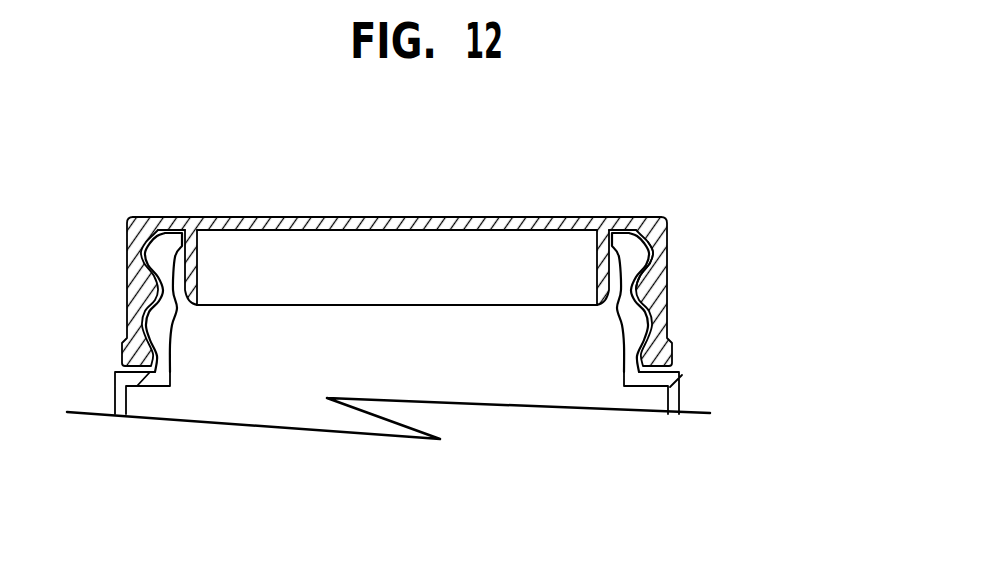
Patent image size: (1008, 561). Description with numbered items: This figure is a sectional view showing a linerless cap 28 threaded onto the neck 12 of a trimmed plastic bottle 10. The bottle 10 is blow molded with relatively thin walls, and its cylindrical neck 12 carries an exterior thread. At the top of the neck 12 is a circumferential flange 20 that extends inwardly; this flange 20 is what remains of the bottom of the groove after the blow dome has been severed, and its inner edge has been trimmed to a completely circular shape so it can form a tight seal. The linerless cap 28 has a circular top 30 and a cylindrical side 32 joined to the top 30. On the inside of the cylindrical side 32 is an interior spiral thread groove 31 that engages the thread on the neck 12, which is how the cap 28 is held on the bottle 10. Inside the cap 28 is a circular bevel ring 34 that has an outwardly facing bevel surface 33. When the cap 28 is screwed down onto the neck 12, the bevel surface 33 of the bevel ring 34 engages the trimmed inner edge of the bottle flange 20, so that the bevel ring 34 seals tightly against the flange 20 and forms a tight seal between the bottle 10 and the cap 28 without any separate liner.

The bottle 10 is at (443, 336).
The neck 12 is at (170, 307).
The flange 20 is at (471, 245).
The linerless cap 28 is at (705, 218).
The circular top 30 is at (413, 215).
The interior spiral thread groove 31 is at (657, 297).
The cylindrical side 32 is at (658, 297).
The bevel surface 33 is at (603, 297).
The bevel ring 34 is at (197, 263).